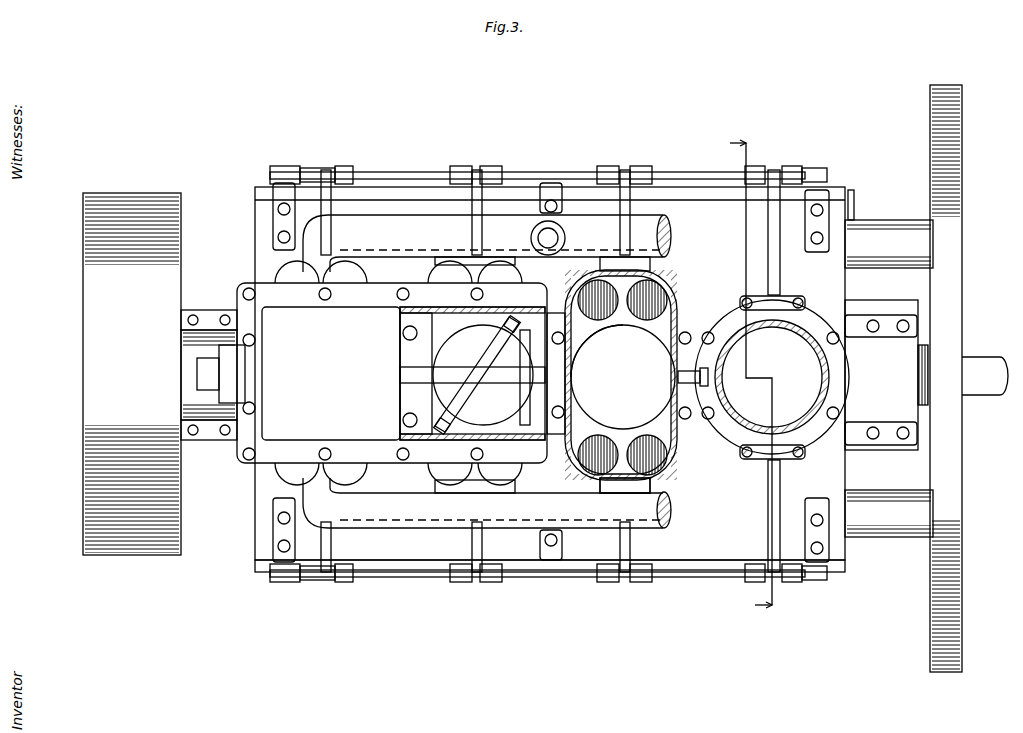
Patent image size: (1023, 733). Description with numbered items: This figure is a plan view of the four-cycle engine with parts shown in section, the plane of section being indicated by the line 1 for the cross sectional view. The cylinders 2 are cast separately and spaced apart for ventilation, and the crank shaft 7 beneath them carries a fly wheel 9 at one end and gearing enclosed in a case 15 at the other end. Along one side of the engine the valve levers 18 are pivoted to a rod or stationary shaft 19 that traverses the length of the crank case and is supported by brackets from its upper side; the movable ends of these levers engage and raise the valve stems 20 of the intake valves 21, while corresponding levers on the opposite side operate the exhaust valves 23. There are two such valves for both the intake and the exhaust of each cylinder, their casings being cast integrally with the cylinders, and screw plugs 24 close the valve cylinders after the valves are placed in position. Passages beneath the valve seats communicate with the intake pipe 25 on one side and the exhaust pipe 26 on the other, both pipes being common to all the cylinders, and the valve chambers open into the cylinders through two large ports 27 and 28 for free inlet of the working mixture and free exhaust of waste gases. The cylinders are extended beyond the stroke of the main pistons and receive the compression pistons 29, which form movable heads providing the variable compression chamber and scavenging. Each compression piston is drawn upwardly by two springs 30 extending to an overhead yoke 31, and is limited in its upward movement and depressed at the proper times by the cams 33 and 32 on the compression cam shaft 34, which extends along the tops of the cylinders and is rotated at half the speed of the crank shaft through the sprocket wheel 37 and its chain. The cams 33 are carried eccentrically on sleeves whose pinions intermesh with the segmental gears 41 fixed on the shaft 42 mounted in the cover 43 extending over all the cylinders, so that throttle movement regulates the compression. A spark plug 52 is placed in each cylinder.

The section line 1— 1 is at (745, 377).
The cylinders 2 is at (735, 400).
The crank shaft 7 is at (990, 398).
The fly wheel 9 is at (84, 378).
The gear case 15 is at (960, 468).
The valve levers 18 is at (327, 200).
The rod or stationary shaft 19 is at (410, 172).
The valve stems 20 is at (775, 298).
The intake valves 21 is at (585, 300).
The exhaust valves 23 is at (660, 470).
The screw plugs 24 is at (292, 278).
The intake pipe 25 is at (487, 243).
The exhaust pipe 26 is at (487, 503).
The port 27 is at (622, 325).
The port 28 is at (628, 405).
The compression pistons 29 is at (510, 414).
The springs 30 is at (476, 375).
The yoke 31 is at (472, 381).
The cams 32 is at (504, 377).
The cams 33 is at (484, 341).
The compression cam shaft 34 is at (200, 372).
The sprocket wheel 37 is at (920, 420).
The segmental gears 41 is at (475, 382).
The shaft 42 is at (556, 373).
The cover 43 is at (331, 373).
The spark plug 52 is at (700, 325).